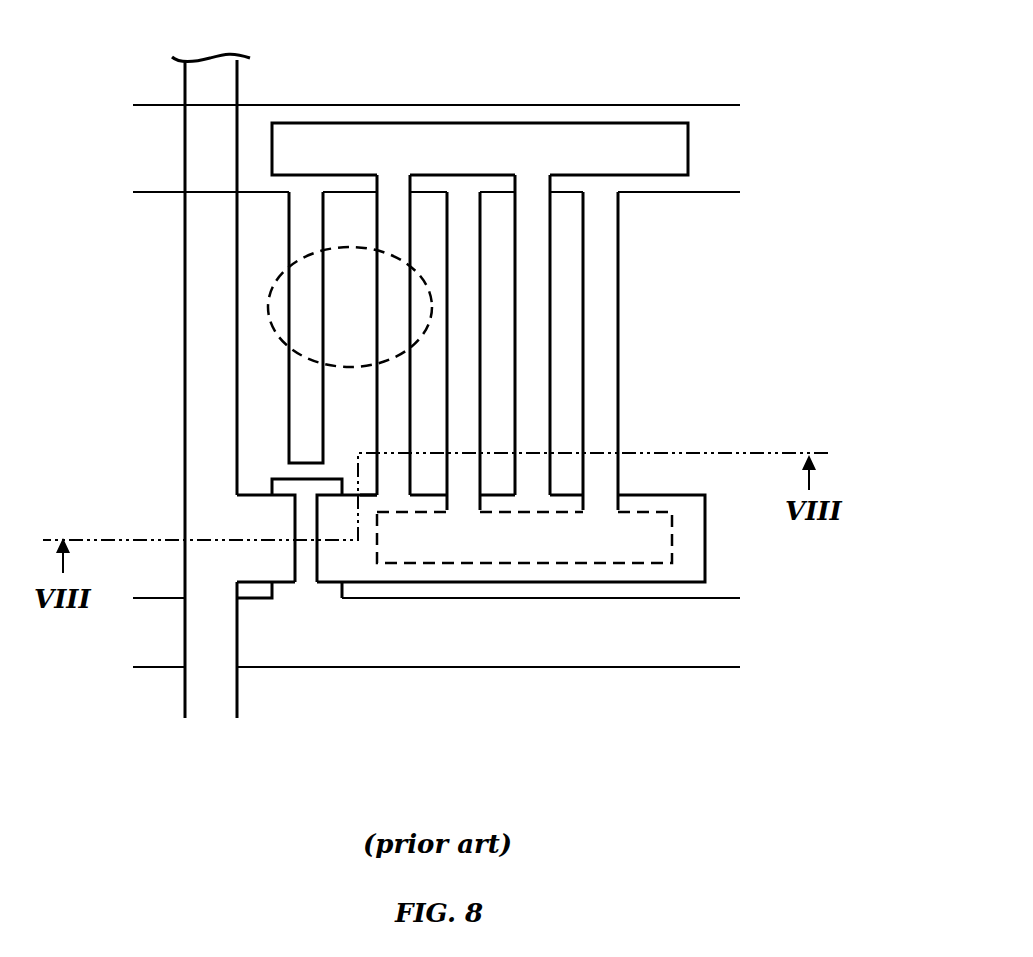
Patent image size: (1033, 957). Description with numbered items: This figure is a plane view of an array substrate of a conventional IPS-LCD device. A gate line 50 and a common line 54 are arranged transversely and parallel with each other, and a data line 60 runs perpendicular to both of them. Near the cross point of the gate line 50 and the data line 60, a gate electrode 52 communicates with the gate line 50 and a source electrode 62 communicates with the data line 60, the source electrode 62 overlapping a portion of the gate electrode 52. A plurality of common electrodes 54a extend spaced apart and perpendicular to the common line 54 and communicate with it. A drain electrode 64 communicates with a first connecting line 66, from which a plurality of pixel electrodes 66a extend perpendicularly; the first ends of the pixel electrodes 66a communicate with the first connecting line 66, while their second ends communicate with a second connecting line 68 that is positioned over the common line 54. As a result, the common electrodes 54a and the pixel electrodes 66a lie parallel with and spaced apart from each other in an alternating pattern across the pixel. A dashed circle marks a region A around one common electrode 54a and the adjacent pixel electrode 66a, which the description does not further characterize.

The gate line 50 is at (483, 658).
The gate electrode 52 is at (302, 560).
The common line 54 is at (706, 112).
The common electrodes 54a is at (300, 253).
The data line 60 is at (193, 470).
The source electrode 62 is at (258, 560).
The drain electrode 64 is at (333, 545).
The first connecting line 66 is at (698, 570).
The pixel electrodes 66a is at (402, 378).
The second connecting line 68 is at (489, 134).
The region A is at (267, 328).